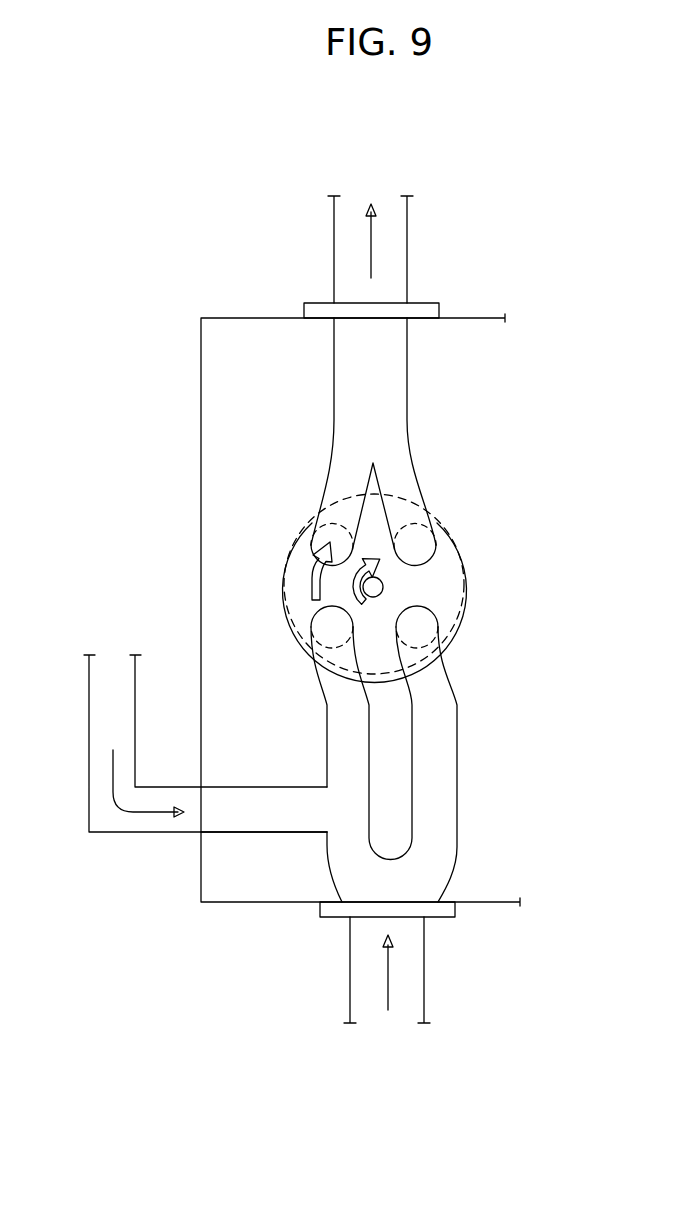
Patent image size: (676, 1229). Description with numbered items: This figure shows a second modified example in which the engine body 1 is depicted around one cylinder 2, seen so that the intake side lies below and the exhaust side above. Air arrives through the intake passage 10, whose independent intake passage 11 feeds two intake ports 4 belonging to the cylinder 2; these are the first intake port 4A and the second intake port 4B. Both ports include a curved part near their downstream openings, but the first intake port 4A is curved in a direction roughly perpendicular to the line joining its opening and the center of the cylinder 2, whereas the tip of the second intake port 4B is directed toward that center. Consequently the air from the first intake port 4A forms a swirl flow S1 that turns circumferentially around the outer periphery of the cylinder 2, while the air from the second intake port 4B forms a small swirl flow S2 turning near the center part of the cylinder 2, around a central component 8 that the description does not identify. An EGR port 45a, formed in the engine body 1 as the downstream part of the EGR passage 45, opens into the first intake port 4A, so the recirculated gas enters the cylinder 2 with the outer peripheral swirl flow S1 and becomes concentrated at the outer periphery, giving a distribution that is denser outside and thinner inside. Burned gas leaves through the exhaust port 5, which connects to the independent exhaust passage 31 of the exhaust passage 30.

The engine body 1 is at (215, 381).
The cylinder 2 is at (449, 531).
The intake port 4 is at (386, 764).
The first intake port 4A is at (333, 722).
The second intake port 4B is at (438, 738).
The exhaust port 5 is at (398, 381).
The valve shaft 8 is at (383, 584).
The intake passage 10 is at (437, 962).
The independent intake passage 11 is at (410, 978).
The exhaust passage 30 is at (420, 257).
The independent exhaust passage 31 is at (398, 243).
The EGR passage 45 is at (103, 730).
The EGR port 45a is at (260, 818).
The swirl flow S1 is at (313, 580).
The small swirl flow S2 is at (347, 614).